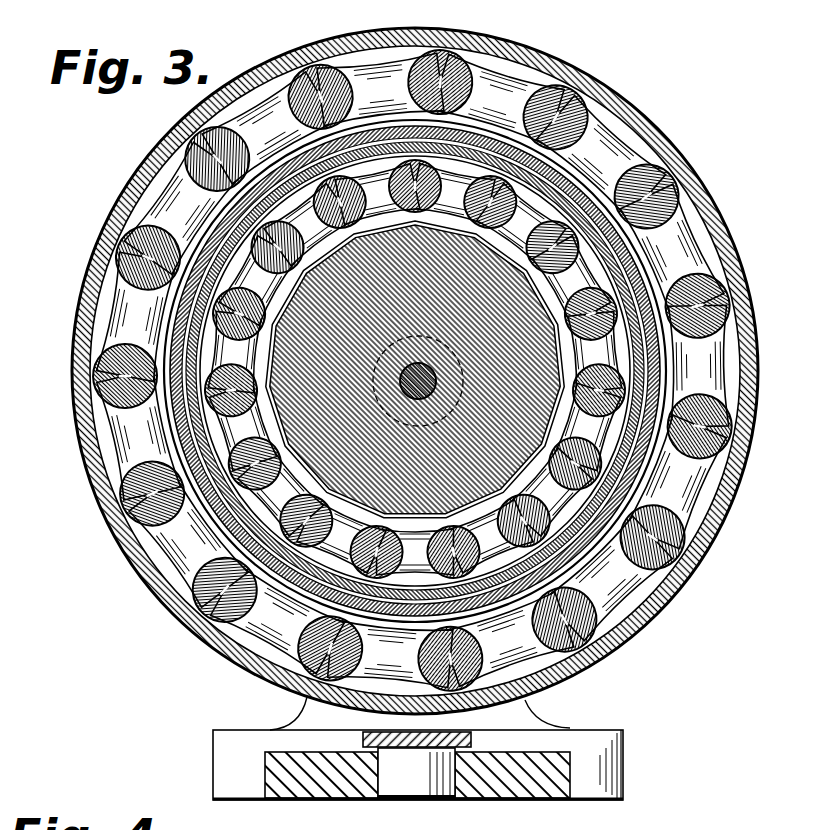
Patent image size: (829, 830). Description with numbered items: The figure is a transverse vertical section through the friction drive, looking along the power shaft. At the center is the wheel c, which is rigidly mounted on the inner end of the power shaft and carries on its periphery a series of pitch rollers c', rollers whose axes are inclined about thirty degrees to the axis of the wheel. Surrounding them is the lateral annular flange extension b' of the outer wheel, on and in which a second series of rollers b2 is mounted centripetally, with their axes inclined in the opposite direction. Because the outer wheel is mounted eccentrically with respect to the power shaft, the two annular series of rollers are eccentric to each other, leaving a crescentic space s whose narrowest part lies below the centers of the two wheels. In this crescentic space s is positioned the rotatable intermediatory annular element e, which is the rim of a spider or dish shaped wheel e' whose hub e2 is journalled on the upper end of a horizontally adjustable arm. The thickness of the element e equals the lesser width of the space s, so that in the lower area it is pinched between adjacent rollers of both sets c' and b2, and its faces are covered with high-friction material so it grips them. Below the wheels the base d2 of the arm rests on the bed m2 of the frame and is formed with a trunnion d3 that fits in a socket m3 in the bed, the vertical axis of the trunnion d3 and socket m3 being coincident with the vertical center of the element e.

The lateral annular flange extension b' is at (415, 371).
The rollers b2 is at (413, 369).
The crescentic space s is at (556, 190).
The intermediatory annular element e is at (483, 371).
The spider or dish shaped wheel e' is at (415, 355).
The hub e2 is at (415, 371).
The wheel c is at (341, 392).
The pitch rollers c' is at (416, 370).
The base d2 is at (471, 732).
The trunnion d3 is at (416, 773).
The base or bed m2 is at (570, 770).
The socket m3 is at (453, 806).